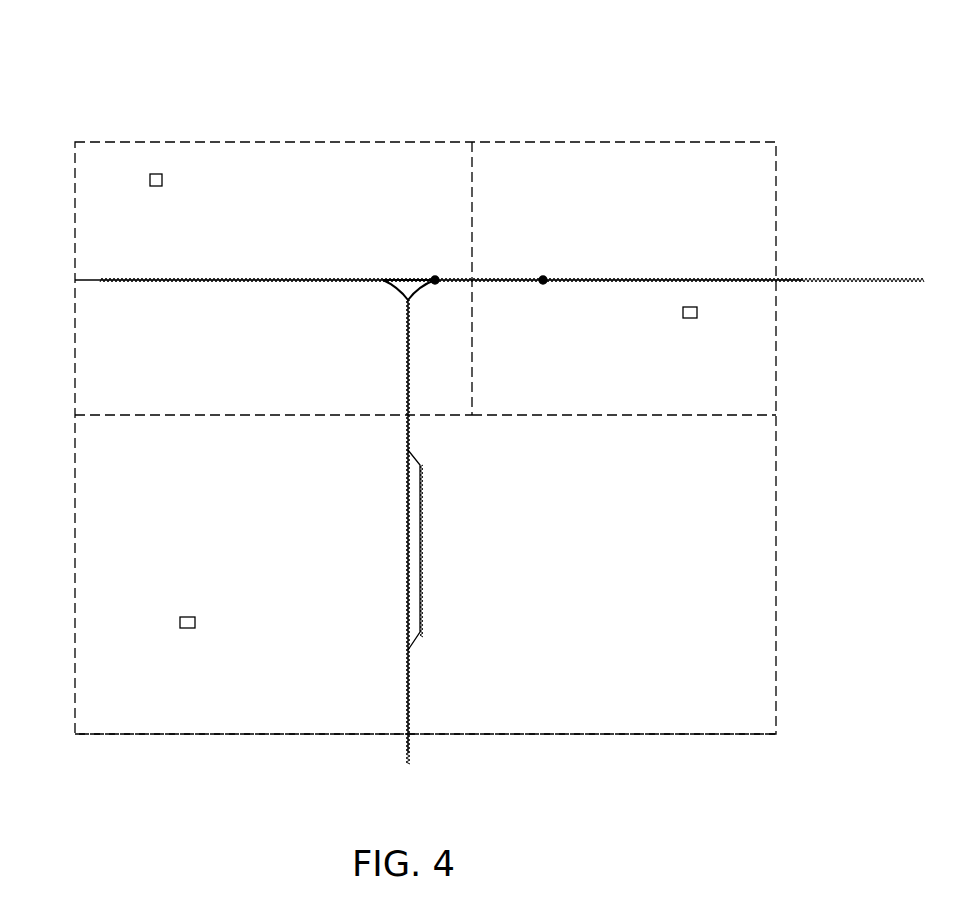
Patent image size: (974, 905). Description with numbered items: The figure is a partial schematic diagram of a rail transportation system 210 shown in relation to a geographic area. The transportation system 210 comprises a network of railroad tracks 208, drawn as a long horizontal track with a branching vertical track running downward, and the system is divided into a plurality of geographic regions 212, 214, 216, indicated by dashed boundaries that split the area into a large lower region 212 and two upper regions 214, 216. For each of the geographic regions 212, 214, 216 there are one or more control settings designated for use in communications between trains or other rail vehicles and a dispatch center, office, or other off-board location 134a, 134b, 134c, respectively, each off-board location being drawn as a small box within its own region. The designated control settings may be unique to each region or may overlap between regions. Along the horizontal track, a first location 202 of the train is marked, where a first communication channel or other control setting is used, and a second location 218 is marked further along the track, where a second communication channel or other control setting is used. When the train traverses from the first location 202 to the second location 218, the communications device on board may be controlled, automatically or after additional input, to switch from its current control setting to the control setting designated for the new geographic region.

The transportation system 210 is at (862, 88).
The geographic region 212 is at (206, 734).
The geographic region 214 is at (200, 415).
The geographic region 216 is at (620, 415).
The second location 218 is at (543, 280).
The first location 202 is at (435, 280).
The network of railroad tracks 208 is at (408, 682).
The off-board location 134a is at (190, 617).
The off-board location 134b is at (691, 318).
The off-board location 134c is at (156, 186).